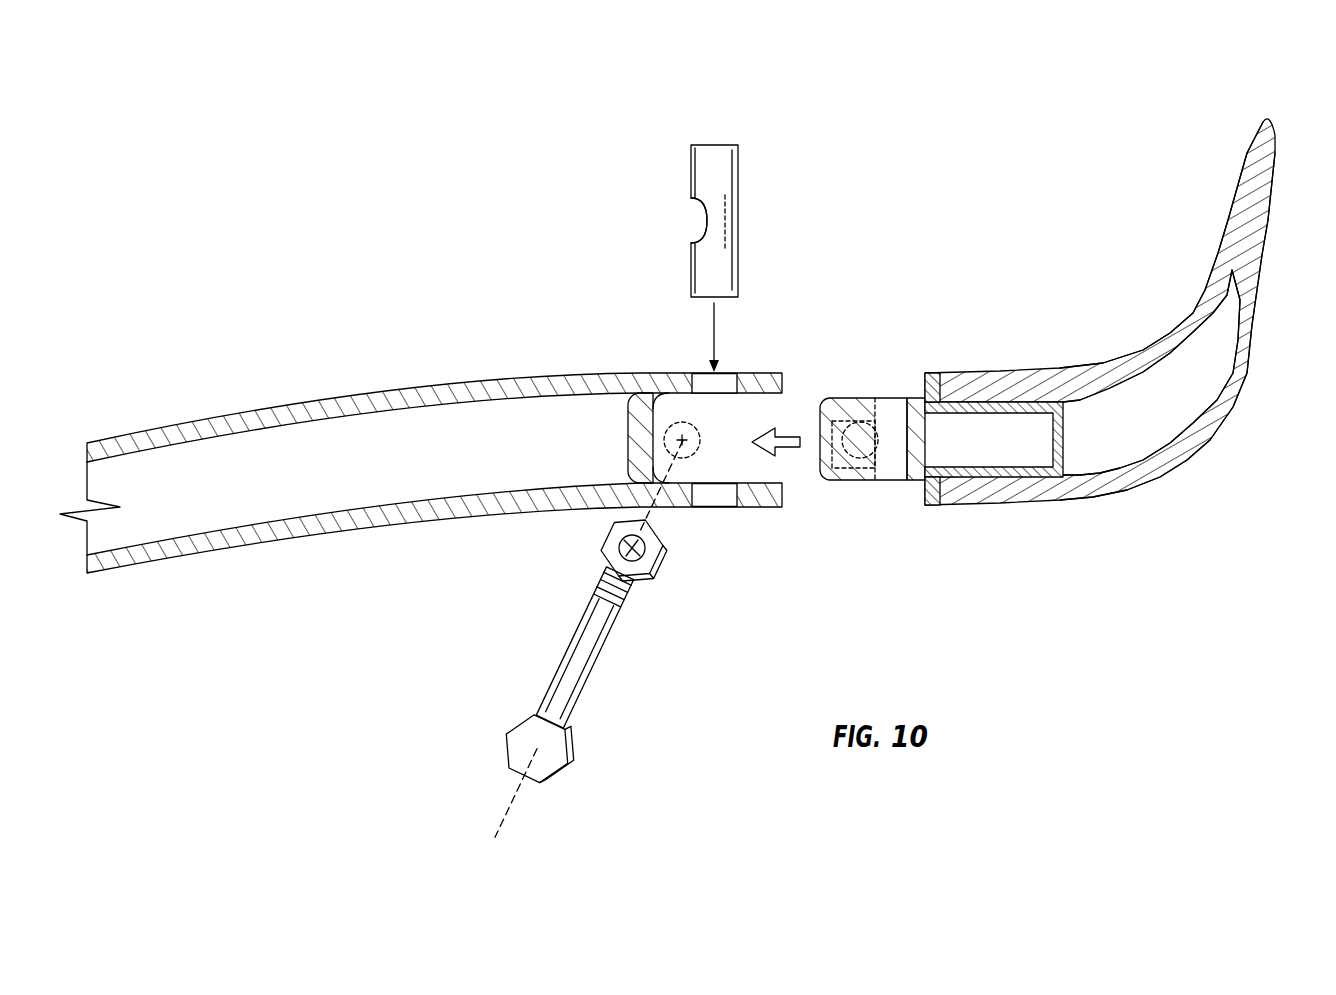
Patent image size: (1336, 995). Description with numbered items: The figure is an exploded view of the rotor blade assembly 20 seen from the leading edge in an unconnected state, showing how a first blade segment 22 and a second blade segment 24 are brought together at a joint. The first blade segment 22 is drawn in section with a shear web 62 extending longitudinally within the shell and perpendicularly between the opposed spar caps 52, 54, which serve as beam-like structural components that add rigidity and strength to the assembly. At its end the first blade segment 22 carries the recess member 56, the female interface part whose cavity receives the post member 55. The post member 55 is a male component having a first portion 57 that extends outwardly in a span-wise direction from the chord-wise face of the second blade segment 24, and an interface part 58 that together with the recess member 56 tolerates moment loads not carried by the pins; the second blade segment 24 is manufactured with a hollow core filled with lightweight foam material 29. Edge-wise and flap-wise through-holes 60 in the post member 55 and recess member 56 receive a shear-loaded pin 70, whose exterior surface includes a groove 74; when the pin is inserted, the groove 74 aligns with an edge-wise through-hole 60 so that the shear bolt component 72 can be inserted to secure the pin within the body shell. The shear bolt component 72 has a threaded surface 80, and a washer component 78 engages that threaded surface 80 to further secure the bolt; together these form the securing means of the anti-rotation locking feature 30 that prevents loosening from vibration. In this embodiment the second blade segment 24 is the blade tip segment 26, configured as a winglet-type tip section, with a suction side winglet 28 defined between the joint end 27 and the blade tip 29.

The rotor blade assembly 20 is at (362, 268).
The first blade segment 22 is at (421, 452).
The second blade segment 24 is at (1114, 329).
The blade tip segment 26 is at (1214, 250).
The joint end 27 is at (983, 372).
The winglet 28 is at (1212, 205).
The blade tip 29 is at (1264, 120).
The anti-rotation locking feature 30 is at (598, 638).
The spar cap 52 is at (214, 398).
The spar cap 54 is at (252, 558).
The post member 55 is at (912, 500).
The recess member 56 is at (653, 382).
The first portion 57 is at (870, 400).
The interface part 58 is at (1017, 412).
The through-hole 60 is at (695, 450).
The shear web 62 is at (240, 485).
The shear-loaded pin 70 is at (726, 258).
The shear bolt component 72 is at (575, 690).
The groove 74 is at (702, 230).
The washer component 78 is at (648, 548).
The threaded surface 80 is at (600, 590).